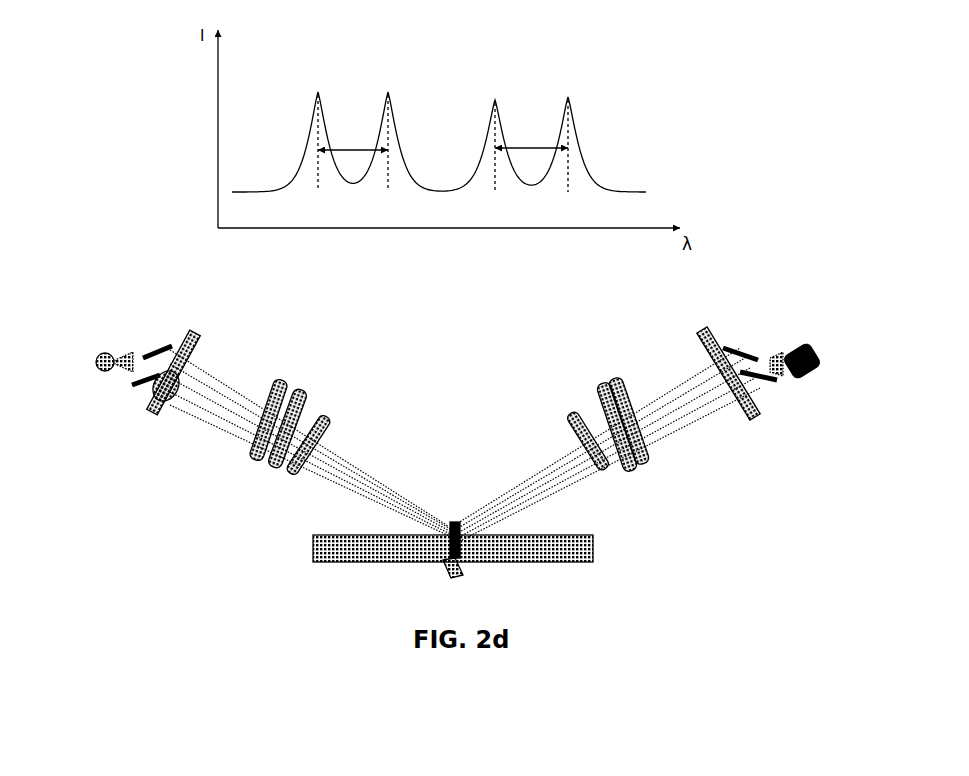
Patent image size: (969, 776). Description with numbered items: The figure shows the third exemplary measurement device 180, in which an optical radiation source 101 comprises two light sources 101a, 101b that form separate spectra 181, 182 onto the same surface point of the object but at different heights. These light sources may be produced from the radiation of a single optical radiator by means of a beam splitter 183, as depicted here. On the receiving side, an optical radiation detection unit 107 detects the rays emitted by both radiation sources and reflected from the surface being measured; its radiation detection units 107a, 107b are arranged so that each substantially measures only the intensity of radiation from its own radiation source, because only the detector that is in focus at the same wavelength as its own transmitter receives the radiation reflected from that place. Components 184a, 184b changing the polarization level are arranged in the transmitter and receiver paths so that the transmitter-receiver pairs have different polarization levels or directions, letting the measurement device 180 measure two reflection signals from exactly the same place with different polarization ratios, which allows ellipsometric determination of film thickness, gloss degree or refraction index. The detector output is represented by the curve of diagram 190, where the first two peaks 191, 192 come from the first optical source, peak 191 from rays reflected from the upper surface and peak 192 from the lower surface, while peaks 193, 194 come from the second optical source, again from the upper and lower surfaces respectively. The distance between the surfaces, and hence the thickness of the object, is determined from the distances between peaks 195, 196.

The measurement device 180 is at (150, 577).
The spectrum 181 is at (454, 576).
The spectrum 182 is at (457, 521).
The beam splitter 183 is at (140, 396).
The polarization changing component 184a is at (174, 396).
The polarization changing component 184b is at (740, 405).
The optical radiation source 101 is at (97, 354).
The light source 101a is at (118, 373).
The light source 101b is at (150, 344).
The optical radiation detection unit 107 is at (798, 351).
The radiation detection unit 107a is at (754, 350).
The radiation detection unit 107b is at (785, 381).
The diagram 190 is at (637, 193).
The peak 191 is at (307, 193).
The peak 192 is at (380, 197).
The peak 193 is at (500, 198).
The peak 194 is at (567, 197).
The distance between peaks 195 is at (360, 150).
The distance between peaks 196 is at (523, 148).